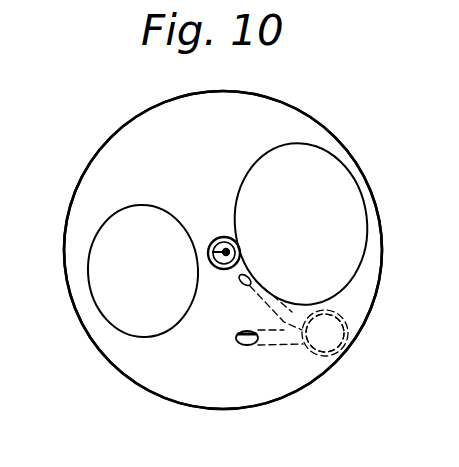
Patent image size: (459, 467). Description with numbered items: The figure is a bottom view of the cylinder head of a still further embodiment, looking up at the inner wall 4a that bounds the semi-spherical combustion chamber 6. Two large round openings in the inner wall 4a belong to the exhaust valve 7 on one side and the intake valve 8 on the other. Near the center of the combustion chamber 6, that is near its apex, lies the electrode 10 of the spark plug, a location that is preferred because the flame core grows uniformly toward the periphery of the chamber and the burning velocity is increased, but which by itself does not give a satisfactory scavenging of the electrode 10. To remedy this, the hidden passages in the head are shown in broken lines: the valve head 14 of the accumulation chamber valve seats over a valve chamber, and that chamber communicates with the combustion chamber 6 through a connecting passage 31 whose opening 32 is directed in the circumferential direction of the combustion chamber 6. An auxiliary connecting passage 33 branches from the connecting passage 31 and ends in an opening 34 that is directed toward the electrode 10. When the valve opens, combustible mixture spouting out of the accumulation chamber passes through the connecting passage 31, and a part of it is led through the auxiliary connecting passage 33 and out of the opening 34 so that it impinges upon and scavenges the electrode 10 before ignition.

The inner wall of the cylinder head 4a is at (221, 133).
The combustion chamber 6 is at (107, 162).
The exhaust valve 7 is at (103, 270).
The intake valve 8 is at (325, 183).
The electrode of the spark plug 10 is at (224, 270).
The valve head 14 is at (327, 345).
The connecting passage 31 is at (279, 335).
The opening of the connecting passage 32 is at (245, 346).
The auxiliary connecting passage 33 is at (292, 312).
The opening of the auxiliary connecting passage 34 is at (243, 286).